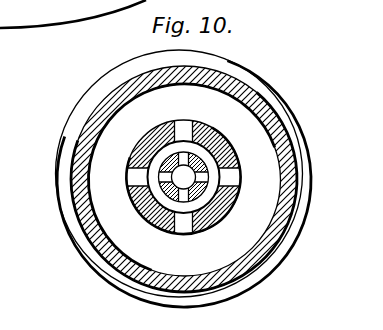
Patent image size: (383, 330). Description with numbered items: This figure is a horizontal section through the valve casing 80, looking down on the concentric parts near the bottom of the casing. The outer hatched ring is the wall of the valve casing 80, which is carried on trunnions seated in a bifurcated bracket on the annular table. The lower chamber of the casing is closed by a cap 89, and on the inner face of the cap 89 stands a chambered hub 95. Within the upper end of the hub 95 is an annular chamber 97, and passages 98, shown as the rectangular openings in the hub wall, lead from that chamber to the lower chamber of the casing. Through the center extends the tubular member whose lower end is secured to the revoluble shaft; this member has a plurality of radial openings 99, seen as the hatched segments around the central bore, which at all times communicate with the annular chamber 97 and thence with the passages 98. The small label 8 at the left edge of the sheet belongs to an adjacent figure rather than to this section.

The reference from adjacent figure 8 is at (0, 237).
The valve casing 80 is at (88, 115).
The cap 89 is at (97, 258).
The hub 95 is at (177, 189).
The annular chamber 97 is at (201, 152).
The passages 98 is at (133, 176).
The radial openings 99 is at (206, 168).